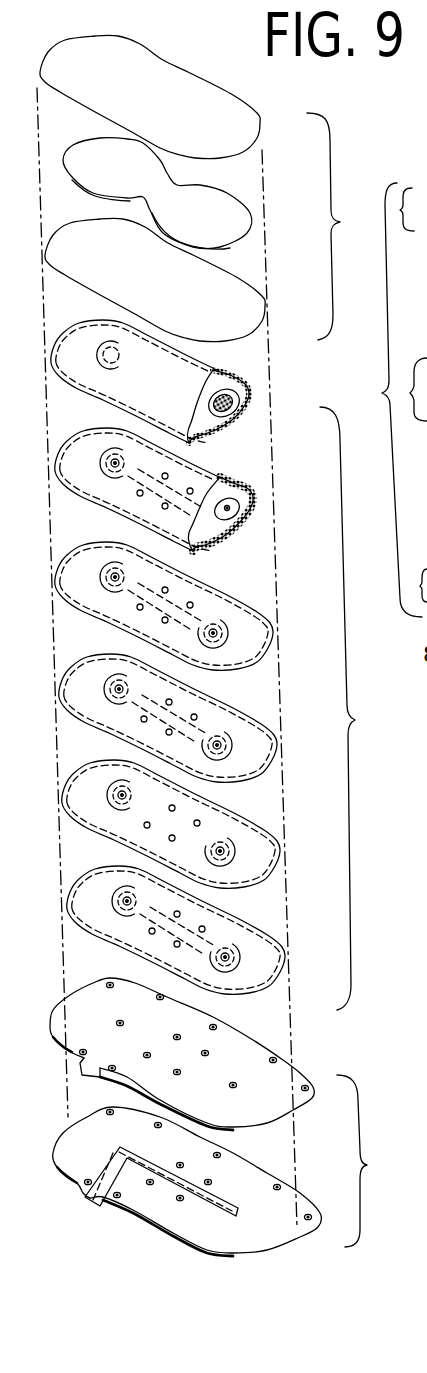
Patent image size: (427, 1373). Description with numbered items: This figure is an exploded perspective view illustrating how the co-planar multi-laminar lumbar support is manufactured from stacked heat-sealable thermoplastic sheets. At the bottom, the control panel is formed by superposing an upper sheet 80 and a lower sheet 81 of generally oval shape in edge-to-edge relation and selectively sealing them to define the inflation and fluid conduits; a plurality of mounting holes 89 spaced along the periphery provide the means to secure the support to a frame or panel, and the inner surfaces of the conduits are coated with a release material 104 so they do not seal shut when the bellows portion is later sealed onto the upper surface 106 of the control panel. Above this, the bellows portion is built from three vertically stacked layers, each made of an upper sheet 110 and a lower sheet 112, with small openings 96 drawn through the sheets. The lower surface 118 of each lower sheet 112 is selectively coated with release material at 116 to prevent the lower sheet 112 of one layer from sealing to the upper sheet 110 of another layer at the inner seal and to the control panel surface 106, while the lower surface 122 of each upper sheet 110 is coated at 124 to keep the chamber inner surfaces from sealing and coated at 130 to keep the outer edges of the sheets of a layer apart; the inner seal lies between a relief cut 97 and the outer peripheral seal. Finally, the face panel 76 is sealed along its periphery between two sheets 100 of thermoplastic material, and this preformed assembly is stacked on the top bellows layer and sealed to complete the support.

The superposed sheets of thermoplastic material 100 is at (174, 83).
The face panel 76 is at (190, 202).
The upper sheet 110 is at (206, 366).
The lower sheet 112 is at (213, 480).
The lower surface of the upper sheet 122 is at (240, 397).
The release coating 124 is at (228, 418).
The release coating 130 is at (205, 428).
The lower surface of the lower sheet 118 is at (247, 510).
The release material coating 116 is at (207, 536).
The relief cut 97 is at (100, 451).
The small apertures 96 is at (192, 490).
The upper surface of the control panel 106 is at (220, 1100).
The upper sheet of the control panel 80 is at (232, 1105).
The lower sheet of the control panel 81 is at (257, 1237).
The release material 104 is at (108, 1173).
The mounting holes 89 is at (281, 1186).